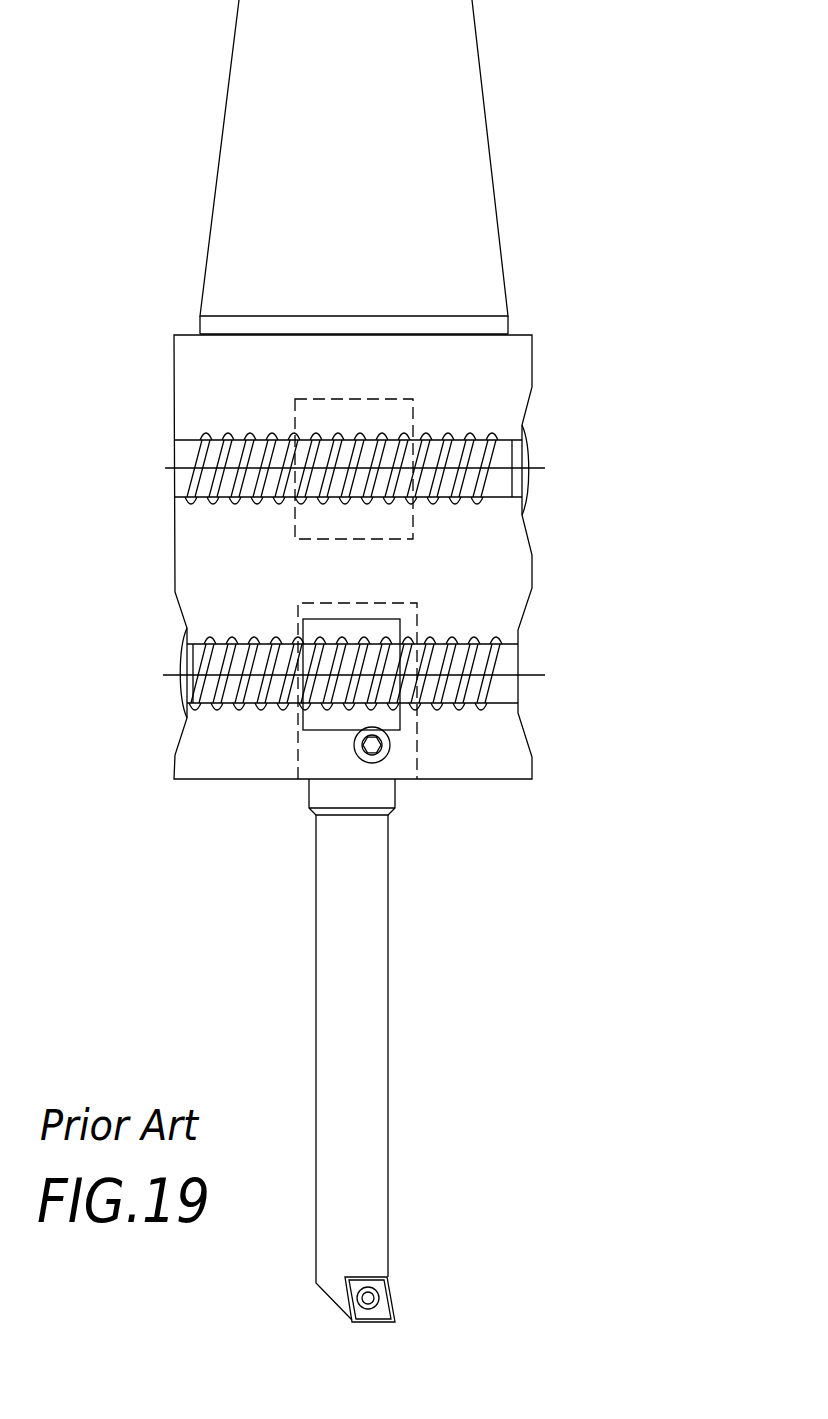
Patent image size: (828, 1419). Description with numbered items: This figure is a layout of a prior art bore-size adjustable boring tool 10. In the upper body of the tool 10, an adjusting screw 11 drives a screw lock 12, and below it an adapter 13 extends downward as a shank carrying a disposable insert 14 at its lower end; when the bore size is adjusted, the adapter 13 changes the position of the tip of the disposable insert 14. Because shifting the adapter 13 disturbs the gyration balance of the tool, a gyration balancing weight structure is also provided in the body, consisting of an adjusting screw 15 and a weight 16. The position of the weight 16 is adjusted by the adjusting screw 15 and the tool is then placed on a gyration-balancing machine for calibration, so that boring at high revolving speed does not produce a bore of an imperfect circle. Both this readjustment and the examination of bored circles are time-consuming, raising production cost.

The bore-size adjustable boring tool 10 is at (582, 373).
The lower adjusting screw 11 is at (230, 693).
The screw lock 12 is at (397, 718).
The adapter 13 is at (367, 923).
The disposable insert 14 is at (387, 1277).
The adjusting screw 15 is at (240, 452).
The weight 16 is at (318, 527).